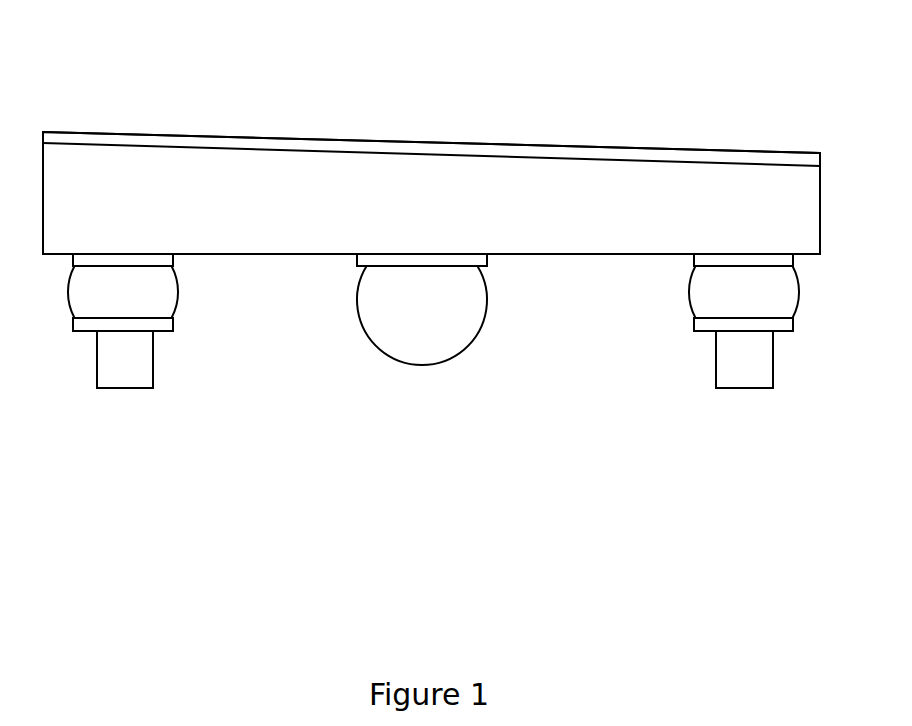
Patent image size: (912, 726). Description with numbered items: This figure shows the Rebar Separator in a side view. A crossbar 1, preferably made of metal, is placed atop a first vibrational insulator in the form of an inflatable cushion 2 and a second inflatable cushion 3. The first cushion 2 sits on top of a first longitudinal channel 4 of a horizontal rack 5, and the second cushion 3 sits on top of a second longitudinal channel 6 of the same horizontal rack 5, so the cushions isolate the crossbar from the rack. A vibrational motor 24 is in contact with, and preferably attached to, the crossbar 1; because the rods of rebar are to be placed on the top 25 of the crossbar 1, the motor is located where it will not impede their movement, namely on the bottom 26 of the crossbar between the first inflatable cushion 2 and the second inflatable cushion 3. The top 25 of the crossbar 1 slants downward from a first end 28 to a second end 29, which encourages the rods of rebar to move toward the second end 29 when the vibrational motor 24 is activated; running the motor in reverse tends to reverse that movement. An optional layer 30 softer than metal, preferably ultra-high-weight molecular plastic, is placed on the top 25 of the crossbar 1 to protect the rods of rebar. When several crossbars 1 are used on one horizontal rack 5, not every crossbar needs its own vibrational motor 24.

The crossbar 1 is at (584, 182).
The first inflatable cushion 2 is at (80, 293).
The second inflatable cushion 3 is at (776, 295).
The first longitudinal channel 4 is at (153, 367).
The horizontal rack 5 is at (145, 388).
The second longitudinal channel 6 is at (715, 368).
The vibrational motor 24 is at (438, 342).
The top of the crossbar 25 is at (412, 155).
The bottom of the crossbar 26 is at (293, 254).
The first end of the crossbar 28 is at (53, 153).
The second end of the crossbar 29 is at (801, 173).
The layer 30 is at (516, 150).